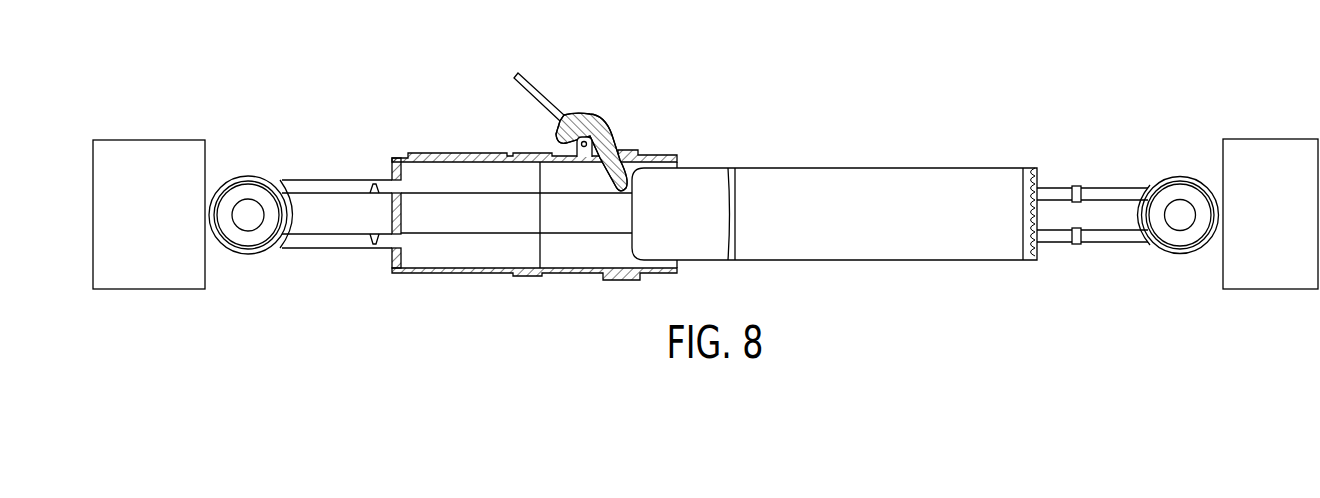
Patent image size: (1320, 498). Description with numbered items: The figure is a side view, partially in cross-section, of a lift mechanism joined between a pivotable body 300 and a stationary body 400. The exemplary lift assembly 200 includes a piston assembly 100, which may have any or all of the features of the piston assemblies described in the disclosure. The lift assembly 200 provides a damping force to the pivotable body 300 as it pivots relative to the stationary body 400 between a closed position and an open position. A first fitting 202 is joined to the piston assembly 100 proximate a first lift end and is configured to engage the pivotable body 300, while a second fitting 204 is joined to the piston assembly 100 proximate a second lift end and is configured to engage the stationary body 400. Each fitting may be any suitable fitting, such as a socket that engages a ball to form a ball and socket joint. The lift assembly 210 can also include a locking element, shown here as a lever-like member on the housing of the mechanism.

The piston assembly 100 is at (895, 178).
The lift assembly 200 is at (714, 158).
The first fitting 202 is at (1180, 170).
The second fitting 204 is at (247, 170).
The lift assembly 210 is at (594, 118).
The pivotable body 300 is at (1273, 137).
The stationary body 400 is at (150, 137).